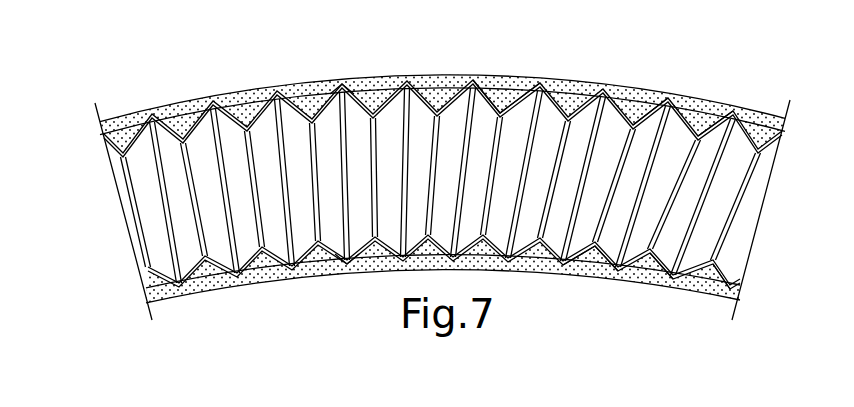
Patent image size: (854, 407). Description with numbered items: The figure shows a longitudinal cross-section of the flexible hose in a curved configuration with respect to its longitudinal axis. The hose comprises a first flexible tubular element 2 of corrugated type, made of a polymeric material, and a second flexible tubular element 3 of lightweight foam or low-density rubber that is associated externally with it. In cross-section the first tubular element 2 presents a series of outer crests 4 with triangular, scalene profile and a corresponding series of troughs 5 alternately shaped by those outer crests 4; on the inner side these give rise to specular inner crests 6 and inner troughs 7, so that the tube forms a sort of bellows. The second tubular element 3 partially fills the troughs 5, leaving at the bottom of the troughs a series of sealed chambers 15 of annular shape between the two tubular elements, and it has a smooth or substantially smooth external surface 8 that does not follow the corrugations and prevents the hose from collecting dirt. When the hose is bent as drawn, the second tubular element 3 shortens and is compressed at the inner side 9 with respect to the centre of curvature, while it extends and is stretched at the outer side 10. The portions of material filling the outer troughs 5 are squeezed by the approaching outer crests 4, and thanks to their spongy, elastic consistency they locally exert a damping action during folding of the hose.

The first flexible tubular element 2 is at (135, 221).
The second flexible tubular element 3 is at (124, 124).
The outer crests 4 is at (540, 80).
The troughs 5 is at (507, 72).
The inner crests 6 is at (622, 146).
The inner troughs 7 is at (662, 140).
The external surface 8 is at (198, 318).
The inner side 9 is at (343, 297).
The outer side 10 is at (330, 64).
The chambers 15 is at (247, 123).